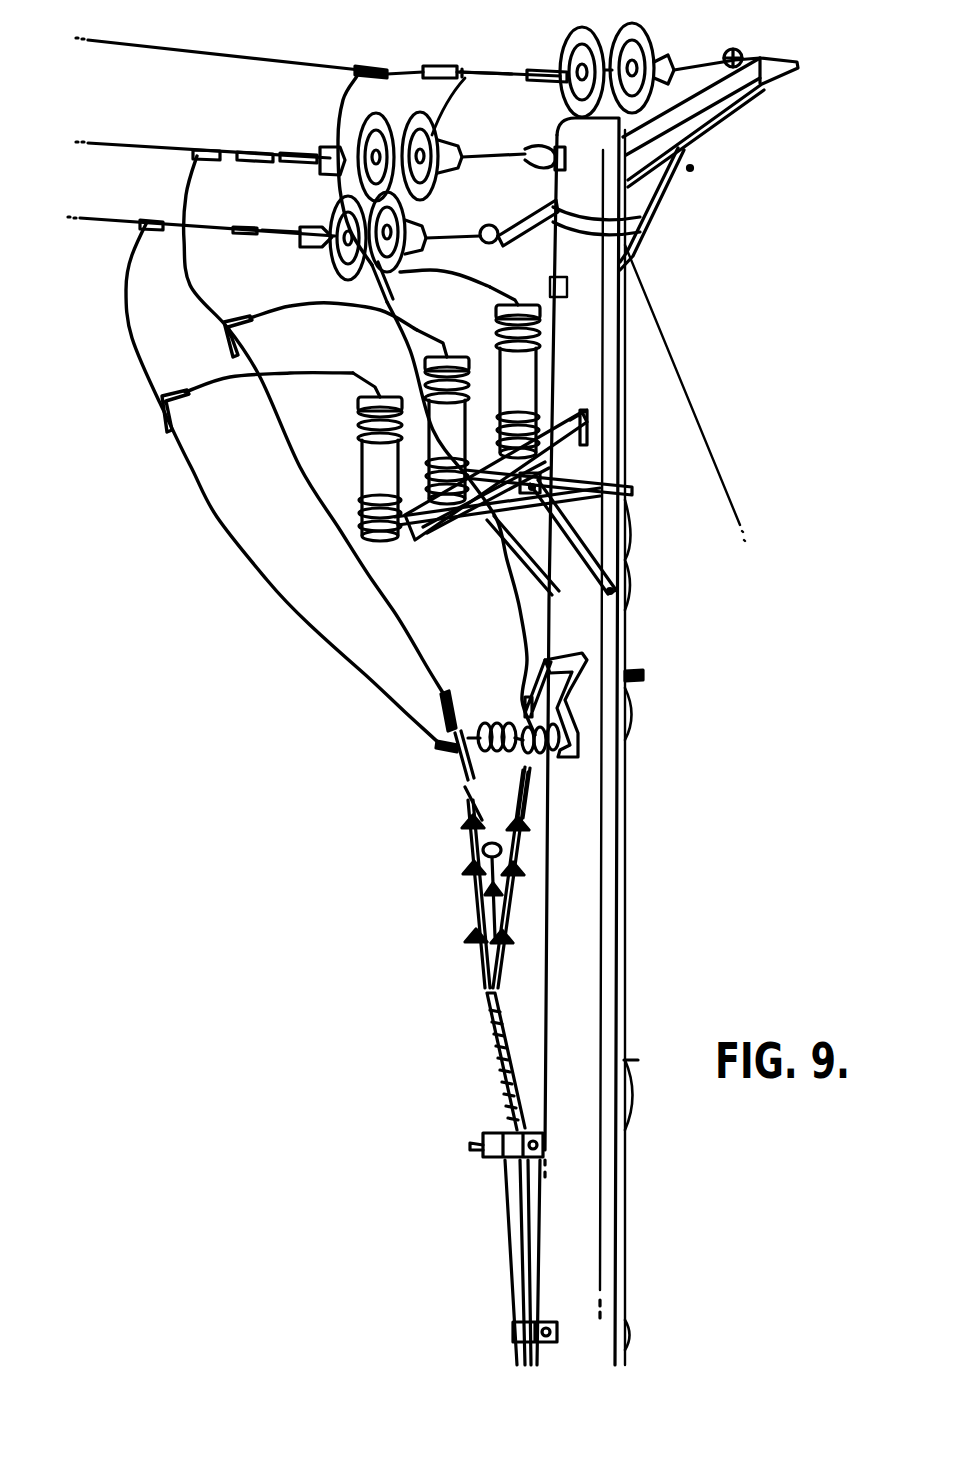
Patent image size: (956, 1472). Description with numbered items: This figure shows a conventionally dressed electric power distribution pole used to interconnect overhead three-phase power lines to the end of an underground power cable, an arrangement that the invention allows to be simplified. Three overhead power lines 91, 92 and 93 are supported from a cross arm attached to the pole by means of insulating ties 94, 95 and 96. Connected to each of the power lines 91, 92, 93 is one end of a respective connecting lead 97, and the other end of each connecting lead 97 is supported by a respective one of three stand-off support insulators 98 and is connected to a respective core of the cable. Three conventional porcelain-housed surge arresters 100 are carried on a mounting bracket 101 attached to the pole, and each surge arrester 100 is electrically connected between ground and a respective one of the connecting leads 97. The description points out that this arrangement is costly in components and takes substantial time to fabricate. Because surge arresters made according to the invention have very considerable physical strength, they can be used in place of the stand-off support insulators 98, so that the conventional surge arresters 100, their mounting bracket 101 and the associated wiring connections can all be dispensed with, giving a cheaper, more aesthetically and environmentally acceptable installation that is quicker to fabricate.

The overhead power line 91 is at (128, 42).
The overhead power line 92 is at (122, 143).
The overhead power line 93 is at (112, 214).
The insulating tie 94 is at (631, 27).
The insulating tie 95 is at (465, 72).
The insulating tie 96 is at (315, 205).
The connecting lead 97 is at (132, 338).
The stand-off support insulator 98 is at (500, 720).
The surge arrester 100 is at (420, 388).
The mounting bracket 101 is at (636, 571).